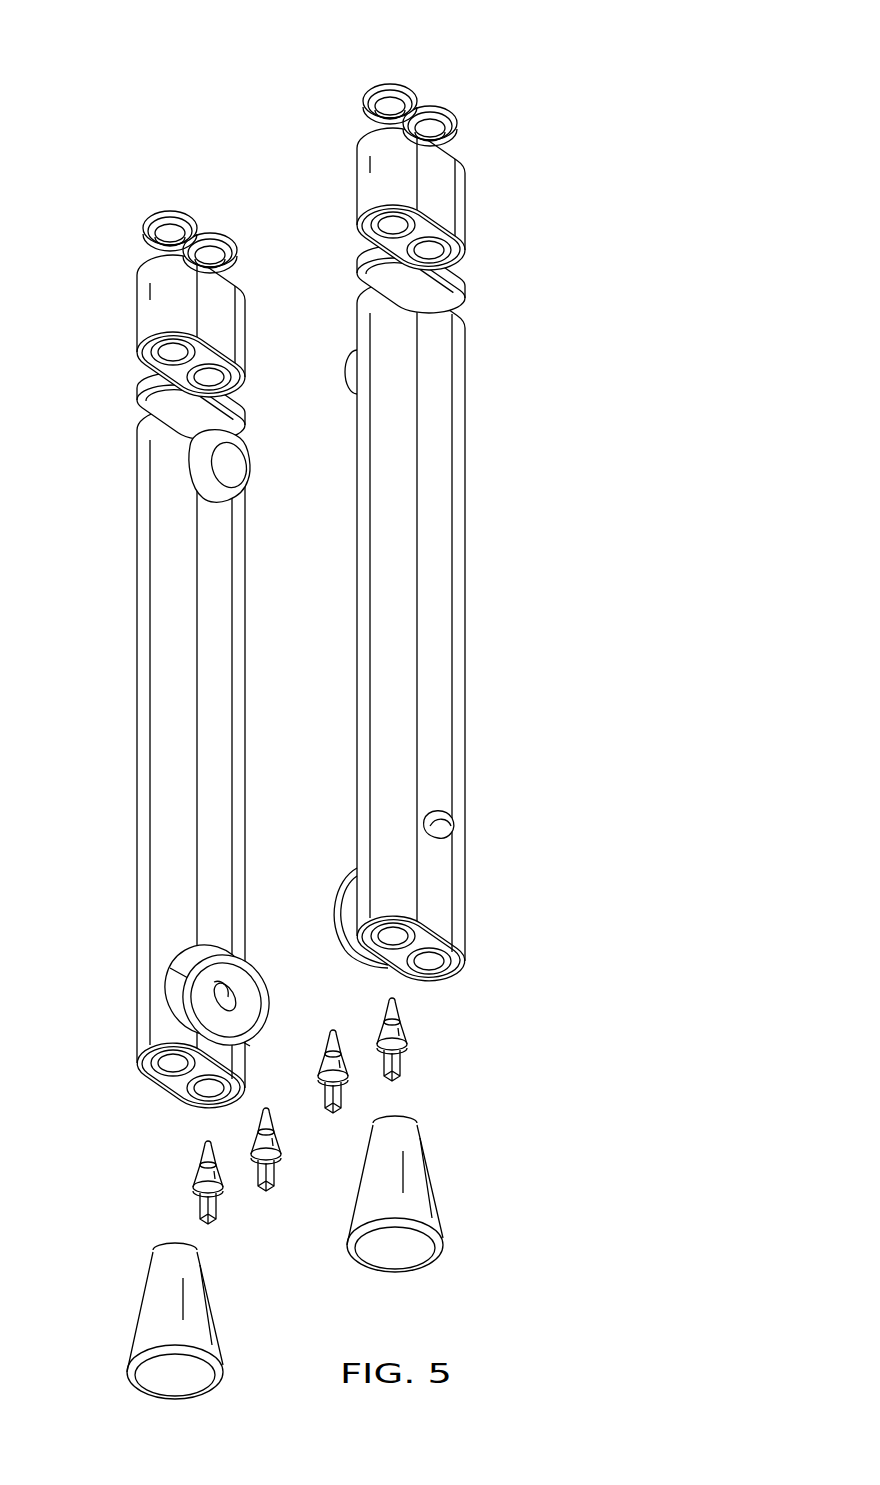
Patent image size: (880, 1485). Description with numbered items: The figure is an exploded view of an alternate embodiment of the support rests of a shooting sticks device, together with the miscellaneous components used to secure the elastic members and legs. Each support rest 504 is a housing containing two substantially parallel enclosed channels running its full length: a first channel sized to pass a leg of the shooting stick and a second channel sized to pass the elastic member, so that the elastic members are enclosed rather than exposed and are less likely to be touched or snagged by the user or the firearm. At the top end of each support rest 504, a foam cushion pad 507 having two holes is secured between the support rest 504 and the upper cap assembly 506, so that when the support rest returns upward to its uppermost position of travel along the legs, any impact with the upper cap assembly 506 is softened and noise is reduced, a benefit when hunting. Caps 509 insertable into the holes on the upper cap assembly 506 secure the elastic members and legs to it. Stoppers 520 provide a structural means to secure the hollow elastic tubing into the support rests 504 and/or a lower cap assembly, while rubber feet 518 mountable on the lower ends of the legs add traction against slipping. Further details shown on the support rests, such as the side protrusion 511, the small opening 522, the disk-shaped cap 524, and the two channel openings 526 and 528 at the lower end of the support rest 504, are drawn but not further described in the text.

The support rest 504 is at (137, 745).
The upper cap assembly 506 is at (137, 300).
The foam cushion pad 507 is at (137, 392).
The caps 509 is at (170, 211).
The protrusion 511 is at (232, 468).
The rubber feet 518 is at (138, 1312).
The stoppers 520 is at (195, 1183).
The opening 522 is at (447, 812).
The disk cap 524 is at (232, 996).
The first passage opening 526 is at (165, 1066).
The second passage opening 528 is at (205, 1090).